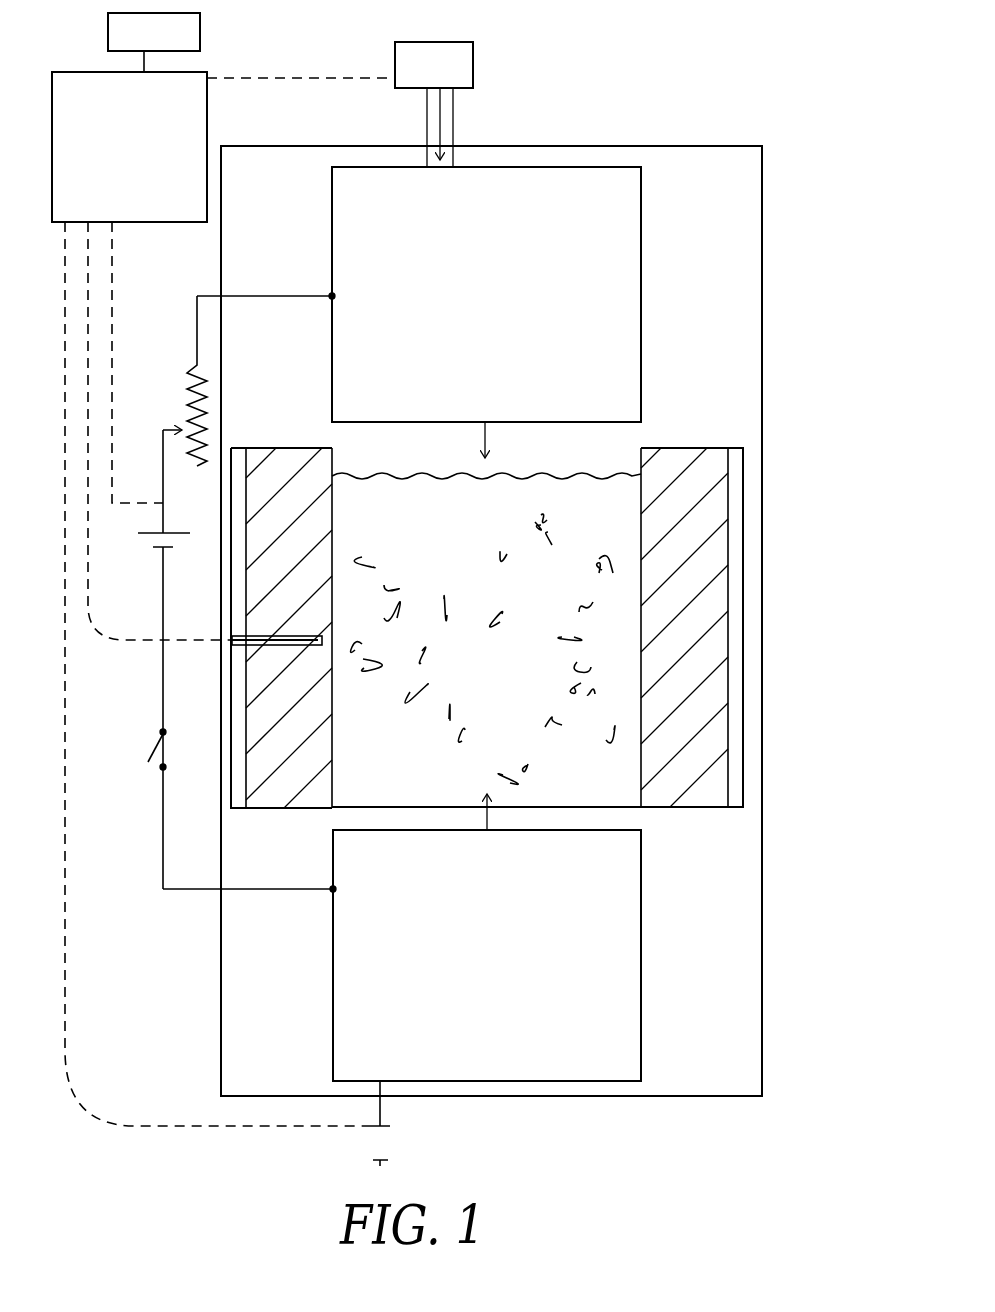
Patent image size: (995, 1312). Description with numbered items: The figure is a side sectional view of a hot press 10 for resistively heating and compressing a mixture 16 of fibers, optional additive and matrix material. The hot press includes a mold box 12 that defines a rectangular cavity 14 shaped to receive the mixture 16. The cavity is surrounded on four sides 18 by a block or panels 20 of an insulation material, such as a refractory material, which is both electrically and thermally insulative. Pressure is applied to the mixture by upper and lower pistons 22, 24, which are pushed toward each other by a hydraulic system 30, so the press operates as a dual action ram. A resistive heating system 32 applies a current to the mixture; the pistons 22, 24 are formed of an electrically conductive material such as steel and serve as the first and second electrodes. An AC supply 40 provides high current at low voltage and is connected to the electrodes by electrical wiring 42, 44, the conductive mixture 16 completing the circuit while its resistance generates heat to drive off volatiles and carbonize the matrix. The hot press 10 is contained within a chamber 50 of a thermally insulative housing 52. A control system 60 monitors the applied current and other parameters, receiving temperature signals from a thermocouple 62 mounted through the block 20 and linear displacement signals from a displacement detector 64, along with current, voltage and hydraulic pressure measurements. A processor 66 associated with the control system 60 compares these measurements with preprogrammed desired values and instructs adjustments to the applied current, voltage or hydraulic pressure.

The hot press 10 is at (692, 93).
The mold box 12 is at (680, 660).
The rectangular cavity 14 is at (584, 539).
The mixture 16 is at (605, 778).
The sides 18 is at (642, 703).
The block of insulation material 20 is at (718, 560).
The upper piston 22 is at (620, 380).
The lower piston 24 is at (618, 972).
The hydraulic system 30 is at (457, 65).
The resistive heating system 32 is at (178, 384).
The AC supply 40 is at (189, 548).
The electrical wiring 42 is at (291, 296).
The electrical wiring 44 is at (240, 890).
The chamber 50 is at (737, 310).
The thermally insulative housing 52 is at (763, 210).
The control system 60 is at (73, 88).
The thermocouple 62 is at (270, 637).
The displacement detector 64 is at (408, 1144).
The processor 66 is at (185, 40).